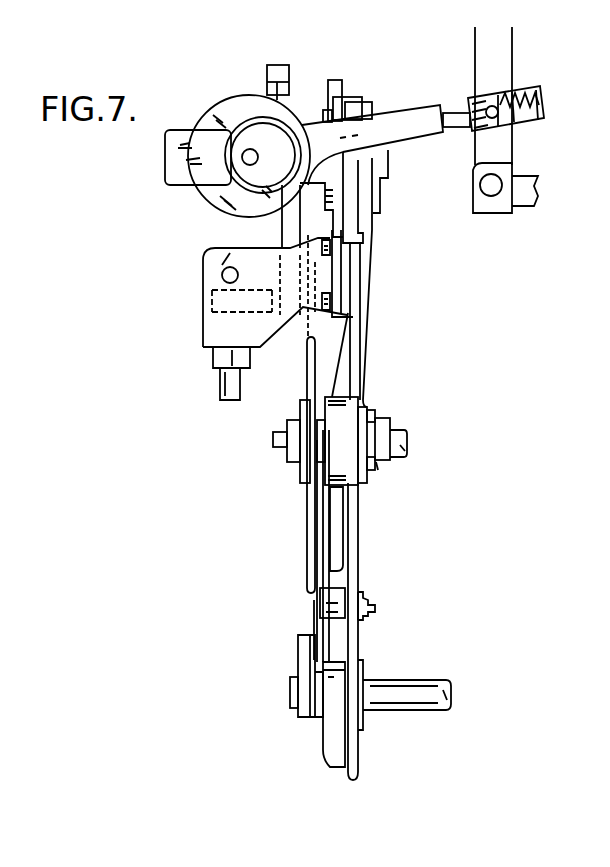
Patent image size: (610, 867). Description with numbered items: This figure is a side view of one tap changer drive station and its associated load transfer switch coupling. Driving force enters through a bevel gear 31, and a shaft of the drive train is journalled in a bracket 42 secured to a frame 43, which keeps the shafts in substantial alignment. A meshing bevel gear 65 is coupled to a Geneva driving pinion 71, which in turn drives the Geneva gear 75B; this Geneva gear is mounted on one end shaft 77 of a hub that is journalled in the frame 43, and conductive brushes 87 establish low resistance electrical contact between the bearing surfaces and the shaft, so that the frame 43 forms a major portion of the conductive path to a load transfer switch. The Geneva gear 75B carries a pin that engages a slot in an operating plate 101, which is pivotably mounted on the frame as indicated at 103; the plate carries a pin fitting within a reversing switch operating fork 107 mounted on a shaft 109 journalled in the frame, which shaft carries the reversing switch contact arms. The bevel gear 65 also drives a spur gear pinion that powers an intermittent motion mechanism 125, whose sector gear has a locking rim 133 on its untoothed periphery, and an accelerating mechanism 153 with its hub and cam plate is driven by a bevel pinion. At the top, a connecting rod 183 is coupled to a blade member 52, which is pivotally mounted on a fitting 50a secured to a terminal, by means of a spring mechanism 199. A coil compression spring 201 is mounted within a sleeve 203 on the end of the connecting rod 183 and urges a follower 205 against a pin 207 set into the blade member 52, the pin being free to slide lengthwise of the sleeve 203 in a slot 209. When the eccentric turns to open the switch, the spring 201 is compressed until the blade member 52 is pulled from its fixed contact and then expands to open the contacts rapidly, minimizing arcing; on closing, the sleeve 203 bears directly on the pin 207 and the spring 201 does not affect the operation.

The bevel gear 31 is at (200, 318).
The bracket 42 is at (337, 266).
The frame 43 is at (367, 345).
The fitting 50a is at (527, 204).
The blade member 52 is at (507, 42).
The bevel gear 65 is at (262, 316).
The Geneva driving pinion 71 is at (322, 228).
The Geneva gear 75B is at (306, 512).
The end shaft 77 is at (282, 448).
The conductive brush 87 is at (378, 464).
The operating plate 101 is at (312, 627).
The pivot mounting 103 is at (316, 607).
The reversing switch operating fork 107 is at (300, 659).
The shaft 109 is at (290, 703).
The intermittent motion mechanism 125 is at (330, 46).
The locking rim 133 is at (273, 63).
The accelerating mechanism 153 is at (240, 68).
The connecting rod 183 is at (407, 110).
The spring mechanism 199 is at (459, 139).
The coil compression spring 201 is at (530, 127).
The sleeve 203 is at (542, 119).
The follower 205 is at (492, 106).
The pin 207 is at (473, 125).
The slot 209 is at (542, 87).